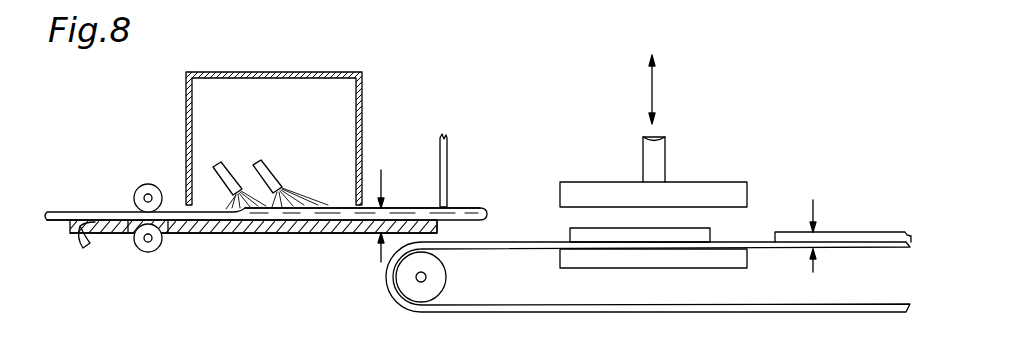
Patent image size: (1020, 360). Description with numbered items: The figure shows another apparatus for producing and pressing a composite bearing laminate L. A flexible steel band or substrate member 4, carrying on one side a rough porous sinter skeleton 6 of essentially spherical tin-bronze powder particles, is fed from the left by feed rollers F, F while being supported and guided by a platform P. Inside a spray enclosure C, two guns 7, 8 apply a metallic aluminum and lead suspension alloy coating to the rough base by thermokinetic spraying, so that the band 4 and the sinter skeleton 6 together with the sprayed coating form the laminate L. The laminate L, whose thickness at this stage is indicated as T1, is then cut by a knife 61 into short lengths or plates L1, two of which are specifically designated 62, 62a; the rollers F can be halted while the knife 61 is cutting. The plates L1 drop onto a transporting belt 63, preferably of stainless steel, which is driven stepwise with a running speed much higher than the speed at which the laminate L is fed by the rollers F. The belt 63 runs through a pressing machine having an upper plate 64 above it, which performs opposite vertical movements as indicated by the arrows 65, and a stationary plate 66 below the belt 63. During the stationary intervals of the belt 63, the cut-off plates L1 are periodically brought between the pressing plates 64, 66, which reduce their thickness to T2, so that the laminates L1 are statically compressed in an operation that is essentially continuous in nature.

The substrate member 4 is at (62, 222).
The sinter skeleton 6 is at (75, 212).
The spray gun 7 is at (222, 175).
The spray gun 8 is at (265, 177).
The knife 61 is at (449, 156).
The plate 62 is at (572, 235).
The plate 62a is at (868, 232).
The transporting belt 63 is at (850, 246).
The upper plate 64 is at (703, 188).
The arrows 65 is at (656, 90).
The stationary plate 66 is at (710, 260).
The spray chamber C is at (363, 107).
The feed rollers F is at (139, 186).
The composite bearing strip or laminate L is at (415, 205).
The plates L1 is at (710, 232).
The platform P is at (275, 233).
The thickness before pressing T1 is at (370, 228).
The thickness after pressing T2 is at (806, 248).